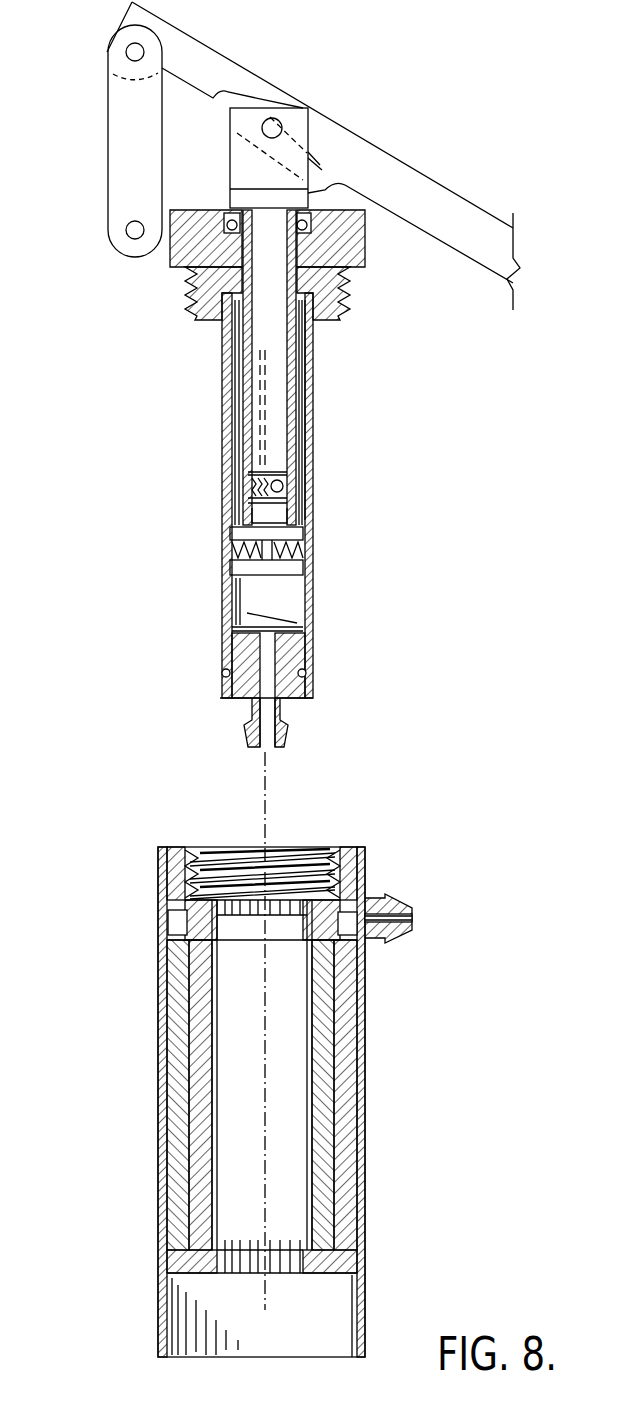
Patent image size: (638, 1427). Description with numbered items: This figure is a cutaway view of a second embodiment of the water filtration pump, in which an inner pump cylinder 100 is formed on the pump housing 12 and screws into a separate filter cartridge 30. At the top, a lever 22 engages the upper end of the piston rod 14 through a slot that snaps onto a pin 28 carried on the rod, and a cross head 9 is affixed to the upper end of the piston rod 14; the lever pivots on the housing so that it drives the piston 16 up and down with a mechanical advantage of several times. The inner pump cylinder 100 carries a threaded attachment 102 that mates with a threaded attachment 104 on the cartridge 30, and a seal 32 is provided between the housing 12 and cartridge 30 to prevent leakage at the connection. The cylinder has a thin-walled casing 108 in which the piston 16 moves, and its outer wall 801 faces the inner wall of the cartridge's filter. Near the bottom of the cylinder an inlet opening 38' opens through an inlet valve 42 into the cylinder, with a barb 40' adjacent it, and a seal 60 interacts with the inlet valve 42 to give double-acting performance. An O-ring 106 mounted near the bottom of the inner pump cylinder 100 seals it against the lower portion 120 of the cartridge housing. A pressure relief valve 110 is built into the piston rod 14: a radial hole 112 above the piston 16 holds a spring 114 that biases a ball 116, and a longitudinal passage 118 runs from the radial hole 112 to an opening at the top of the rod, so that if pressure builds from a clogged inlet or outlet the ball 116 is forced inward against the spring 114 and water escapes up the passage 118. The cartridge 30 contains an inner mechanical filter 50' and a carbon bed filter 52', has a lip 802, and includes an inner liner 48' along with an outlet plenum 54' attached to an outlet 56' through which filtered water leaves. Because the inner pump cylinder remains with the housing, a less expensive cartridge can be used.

The lever 22 is at (352, 160).
The cross head 9 is at (250, 173).
The pin 28 is at (258, 128).
The pump housing 12 is at (367, 240).
The threaded attachment 102 is at (350, 296).
The piston rod 14 is at (313, 380).
The thin-walled casing 108 is at (222, 343).
The outer wall 801 is at (313, 395).
The longitudinal passage 118 is at (273, 413).
The ball 116 is at (283, 473).
The radial hole 112 is at (250, 455).
The pressure relief valve 110 is at (253, 512).
The spring 114 is at (267, 503).
The inner pump cylinder 100 is at (322, 487).
The seal 60 is at (313, 550).
The piston 16 is at (257, 583).
The inlet valve 42 is at (273, 613).
The O-ring 106 is at (307, 680).
The barb 40' is at (293, 724).
The inlet opening 38' is at (218, 1031).
The cartridge 30 is at (370, 970).
The lip 802 is at (365, 950).
The threaded attachment 104 is at (307, 853).
The carbon bed filter 52' is at (299, 1086).
The inner mechanical filter 50' is at (294, 1095).
The inner liner 48' is at (197, 1086).
The outlet plenum 54' is at (212, 925).
The outlet 56' is at (431, 917).
The seal 32 is at (363, 1173).
The lower portion of the cartridge housing 120 is at (280, 1260).